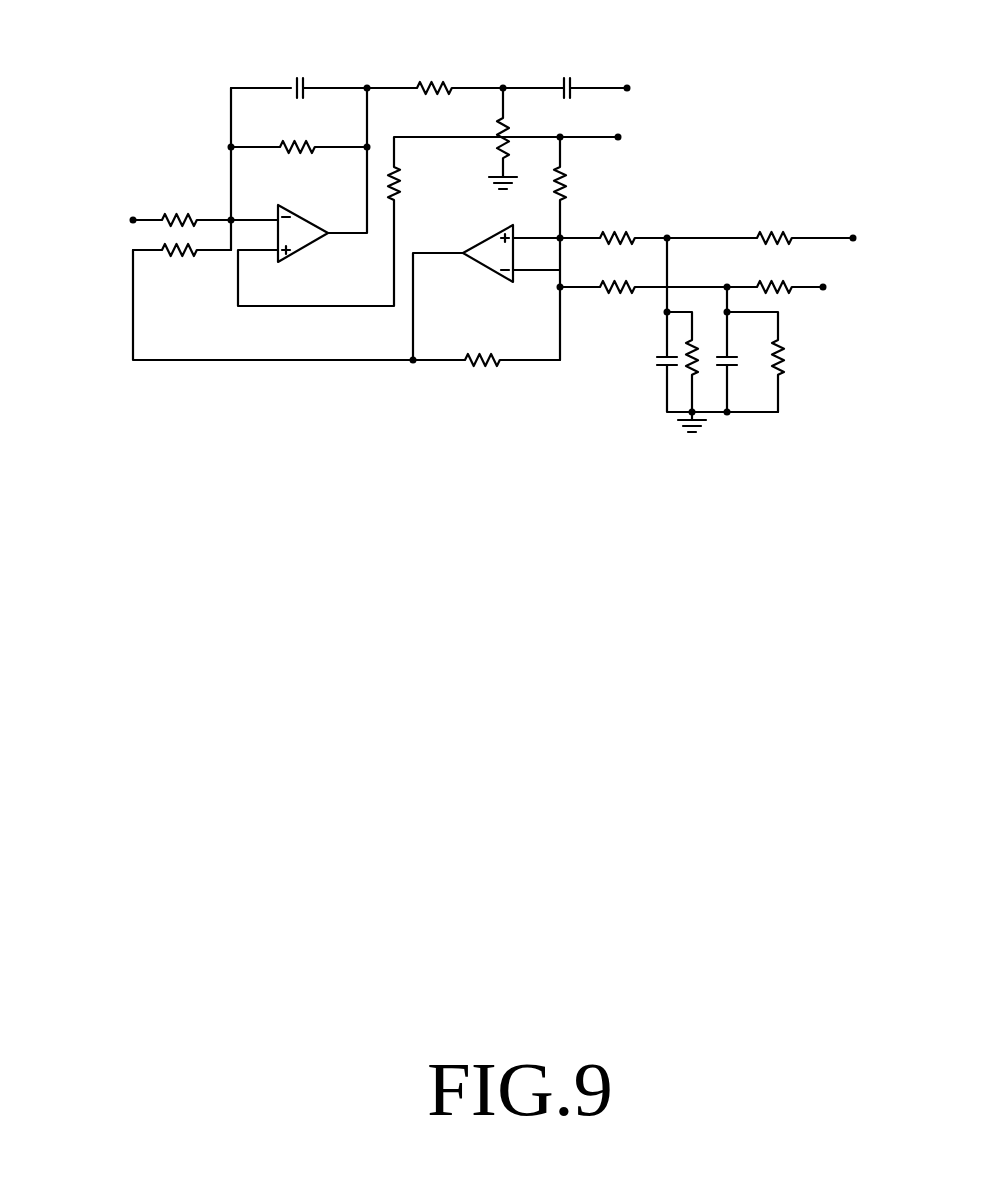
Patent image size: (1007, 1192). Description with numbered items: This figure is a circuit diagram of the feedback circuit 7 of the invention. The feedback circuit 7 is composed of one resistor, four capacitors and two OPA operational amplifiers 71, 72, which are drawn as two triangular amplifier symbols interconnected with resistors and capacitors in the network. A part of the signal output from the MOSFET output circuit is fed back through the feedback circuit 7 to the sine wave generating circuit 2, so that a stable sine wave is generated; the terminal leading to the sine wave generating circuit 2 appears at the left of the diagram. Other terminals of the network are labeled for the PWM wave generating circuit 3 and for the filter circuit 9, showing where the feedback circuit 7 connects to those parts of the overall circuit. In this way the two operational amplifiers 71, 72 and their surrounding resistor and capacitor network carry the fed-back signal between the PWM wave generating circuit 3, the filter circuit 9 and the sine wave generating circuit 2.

The sine wave generating circuit 2 is at (133, 220).
The PWM wave generating circuit 3 is at (627, 88).
The feedback circuit 7 is at (642, 222).
The filter circuit 9 is at (853, 238).
The OPA operational amplifier 71 is at (480, 257).
The OPA operational amplifier 72 is at (307, 237).